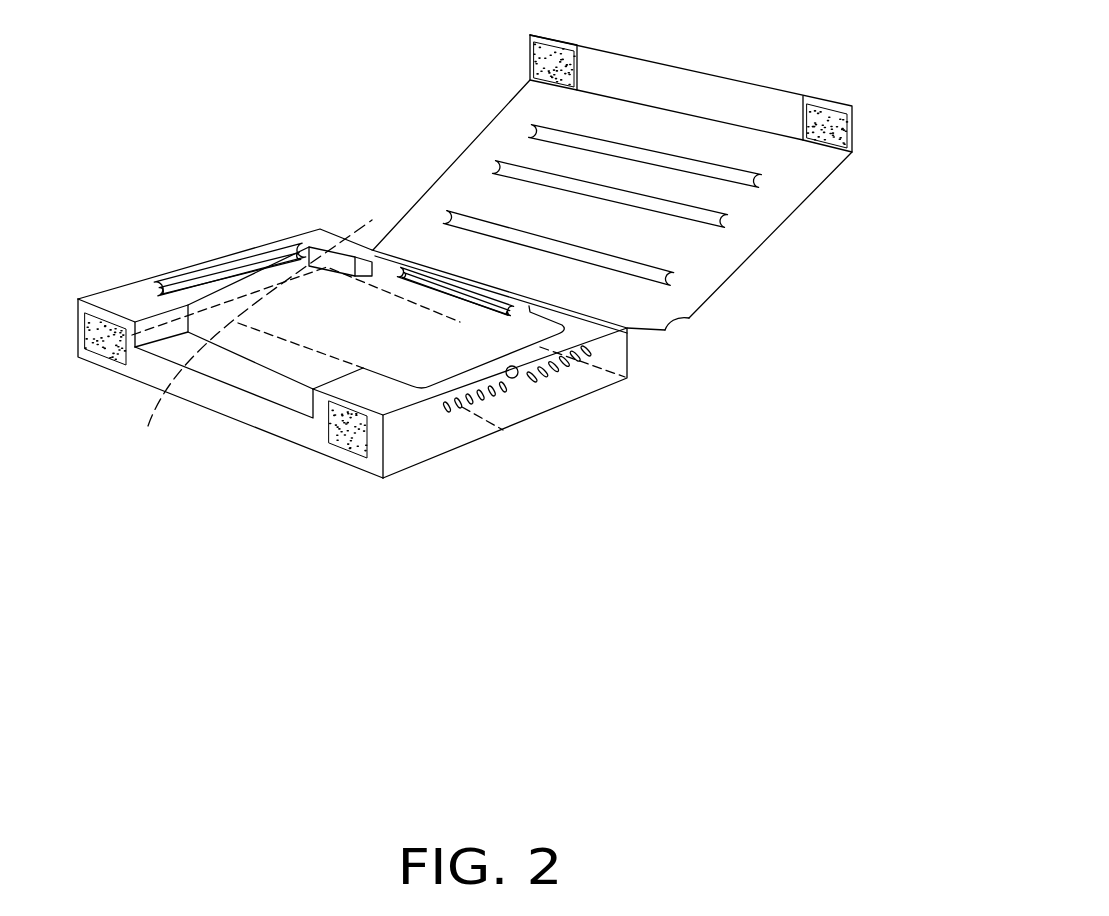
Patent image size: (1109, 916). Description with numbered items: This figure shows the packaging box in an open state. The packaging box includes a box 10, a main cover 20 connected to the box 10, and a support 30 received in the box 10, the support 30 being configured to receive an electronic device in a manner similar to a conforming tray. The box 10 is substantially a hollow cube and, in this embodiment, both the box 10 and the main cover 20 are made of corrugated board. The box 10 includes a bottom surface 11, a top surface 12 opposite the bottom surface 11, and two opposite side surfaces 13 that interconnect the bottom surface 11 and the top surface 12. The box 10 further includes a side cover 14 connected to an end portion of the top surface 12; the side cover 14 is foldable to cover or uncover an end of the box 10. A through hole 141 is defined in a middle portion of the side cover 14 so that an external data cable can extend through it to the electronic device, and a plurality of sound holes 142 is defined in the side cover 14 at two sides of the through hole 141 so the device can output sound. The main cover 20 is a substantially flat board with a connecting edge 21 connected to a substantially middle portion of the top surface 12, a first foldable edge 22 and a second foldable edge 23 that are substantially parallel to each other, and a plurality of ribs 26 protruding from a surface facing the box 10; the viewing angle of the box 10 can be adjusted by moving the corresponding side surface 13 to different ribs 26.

The box 10 is at (357, 383).
The bottom surface 11 is at (222, 415).
The top surface 12 is at (387, 400).
The side surfaces 13 is at (297, 423).
The side cover 14 is at (509, 441).
The through hole 141 is at (513, 377).
The sound holes 142 is at (585, 360).
The main cover 20 is at (623, 213).
The connecting edge 21 is at (249, 341).
The first foldable edge 22 is at (378, 292).
The second foldable edge 23 is at (675, 318).
The ribs 26 is at (755, 181).
The support 30 is at (252, 287).